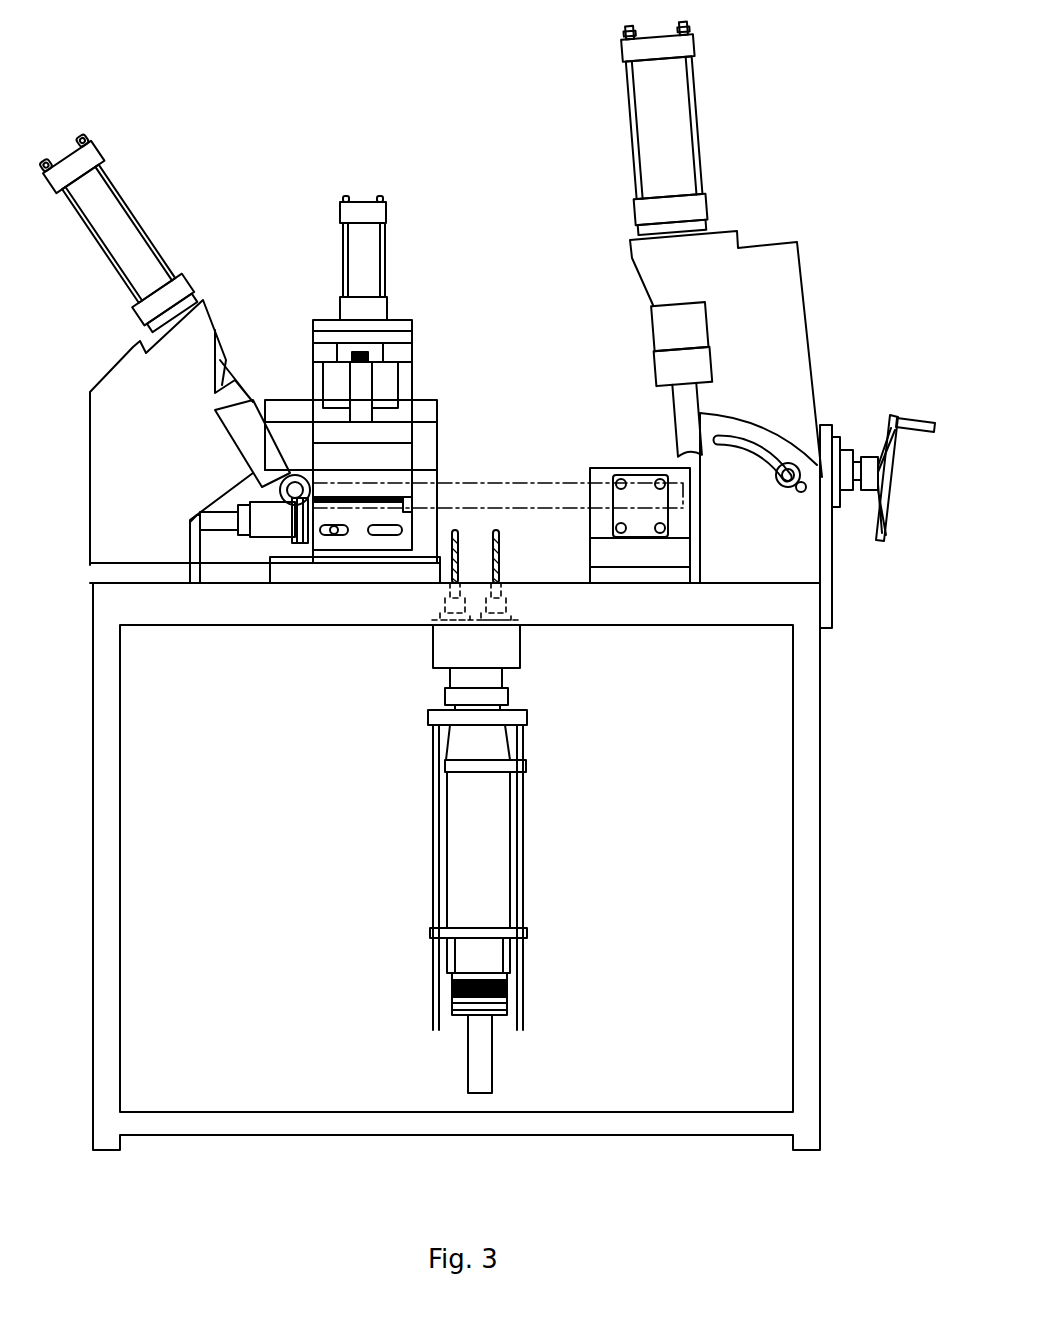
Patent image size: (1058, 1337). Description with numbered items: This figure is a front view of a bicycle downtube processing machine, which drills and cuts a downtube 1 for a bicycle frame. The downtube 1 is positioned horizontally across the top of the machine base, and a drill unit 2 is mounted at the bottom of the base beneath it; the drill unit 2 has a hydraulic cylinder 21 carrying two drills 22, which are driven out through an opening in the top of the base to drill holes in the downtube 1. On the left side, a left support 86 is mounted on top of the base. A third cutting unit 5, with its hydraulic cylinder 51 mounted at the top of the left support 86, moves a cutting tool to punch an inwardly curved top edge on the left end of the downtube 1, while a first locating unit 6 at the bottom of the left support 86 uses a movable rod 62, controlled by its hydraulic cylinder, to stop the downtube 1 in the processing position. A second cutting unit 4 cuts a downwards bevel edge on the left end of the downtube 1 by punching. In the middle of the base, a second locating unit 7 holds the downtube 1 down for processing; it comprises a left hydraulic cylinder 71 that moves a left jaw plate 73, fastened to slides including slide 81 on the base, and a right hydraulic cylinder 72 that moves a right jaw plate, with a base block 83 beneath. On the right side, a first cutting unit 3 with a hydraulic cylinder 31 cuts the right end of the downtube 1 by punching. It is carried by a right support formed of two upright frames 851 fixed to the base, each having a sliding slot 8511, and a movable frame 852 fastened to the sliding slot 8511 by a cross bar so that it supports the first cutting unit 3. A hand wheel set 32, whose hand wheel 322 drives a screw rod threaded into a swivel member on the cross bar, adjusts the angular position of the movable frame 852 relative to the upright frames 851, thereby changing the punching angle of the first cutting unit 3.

The downtube 1 is at (526, 487).
The drill unit 2 is at (474, 859).
The cylinder body 21 is at (495, 820).
The drills 22 is at (496, 540).
The first cutting unit 3 is at (701, 239).
The hydraulic cylinder 31 is at (675, 112).
The hand wheel set 32 is at (877, 483).
The hand wheel 322 is at (878, 540).
The second cutting unit 4 is at (297, 476).
The third cutting unit 5 is at (163, 309).
The hydraulic cylinder 51 is at (122, 218).
The first locating unit 6 is at (197, 543).
The movable rod 62 is at (257, 527).
The second locating unit 7 is at (402, 452).
The left hydraulic cylinder 71 is at (373, 250).
The right hydraulic cylinder 72 is at (647, 531).
The left jaw plate 73 is at (365, 543).
The slide 81 is at (320, 578).
The base block 83 is at (607, 578).
The upright frames 851 is at (739, 543).
The sliding slot 8511 is at (760, 460).
The movable frame 852 is at (788, 275).
The left support 86 is at (118, 388).